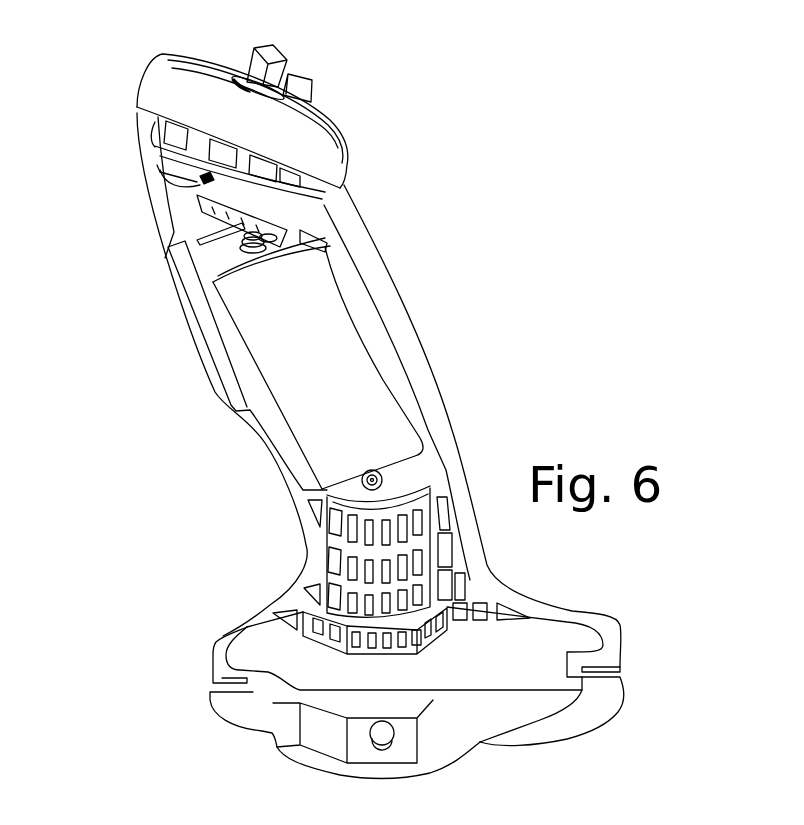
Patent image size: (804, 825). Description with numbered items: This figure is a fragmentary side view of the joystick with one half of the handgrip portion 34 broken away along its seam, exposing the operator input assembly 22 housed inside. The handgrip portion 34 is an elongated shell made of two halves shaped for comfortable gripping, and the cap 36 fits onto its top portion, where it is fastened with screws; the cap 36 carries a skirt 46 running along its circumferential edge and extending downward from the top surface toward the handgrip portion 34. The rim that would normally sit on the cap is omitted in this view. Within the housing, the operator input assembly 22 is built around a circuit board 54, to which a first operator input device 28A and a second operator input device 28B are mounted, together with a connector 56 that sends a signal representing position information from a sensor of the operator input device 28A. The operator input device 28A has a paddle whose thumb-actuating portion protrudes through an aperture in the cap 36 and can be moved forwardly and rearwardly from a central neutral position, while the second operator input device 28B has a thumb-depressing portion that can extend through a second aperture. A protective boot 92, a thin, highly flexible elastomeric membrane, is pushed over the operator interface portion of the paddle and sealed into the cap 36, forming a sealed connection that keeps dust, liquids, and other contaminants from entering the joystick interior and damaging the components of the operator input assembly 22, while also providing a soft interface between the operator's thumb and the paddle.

The operator input assembly 22 is at (493, 167).
The operator input device 28A is at (277, 47).
The second operator input device 28B is at (317, 82).
The handgrip portion 34 is at (388, 353).
The cap 36 is at (178, 52).
The skirt 46 is at (160, 98).
The circuit board 54 is at (325, 215).
The connector 56 is at (300, 266).
The protective boot 92 is at (288, 58).